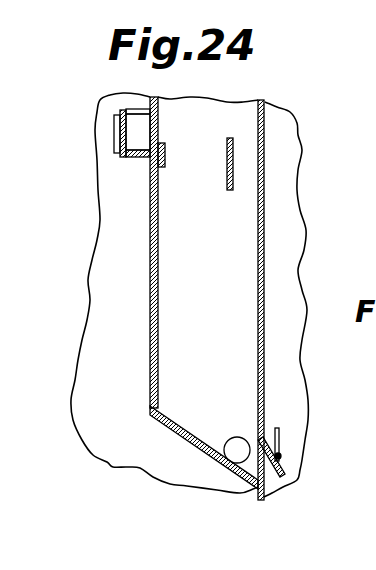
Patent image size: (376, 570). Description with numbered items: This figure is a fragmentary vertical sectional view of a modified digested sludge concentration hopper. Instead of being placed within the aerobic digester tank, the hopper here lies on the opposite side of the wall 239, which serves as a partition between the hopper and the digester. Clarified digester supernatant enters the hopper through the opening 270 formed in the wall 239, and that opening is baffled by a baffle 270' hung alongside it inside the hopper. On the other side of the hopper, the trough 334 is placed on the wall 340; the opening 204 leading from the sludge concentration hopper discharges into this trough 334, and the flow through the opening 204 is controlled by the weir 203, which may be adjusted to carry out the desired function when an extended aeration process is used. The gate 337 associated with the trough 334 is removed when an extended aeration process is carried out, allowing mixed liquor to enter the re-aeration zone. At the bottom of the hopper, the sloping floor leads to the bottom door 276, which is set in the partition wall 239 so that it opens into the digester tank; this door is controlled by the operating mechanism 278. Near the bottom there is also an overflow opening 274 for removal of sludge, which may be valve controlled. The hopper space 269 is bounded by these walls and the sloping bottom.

The opening 204 is at (160, 100).
The weir 203 is at (165, 143).
The gate 337 is at (116, 133).
The trough 334 is at (142, 157).
The opening 270 is at (306, 300).
The baffle 270' is at (204, 170).
The wall 239 is at (263, 258).
The wall 340 is at (148, 326).
The compartment 269 is at (144, 372).
The overflow opening 274 is at (237, 437).
The operating mechanism 278 is at (280, 437).
The bottom door 276 is at (282, 468).